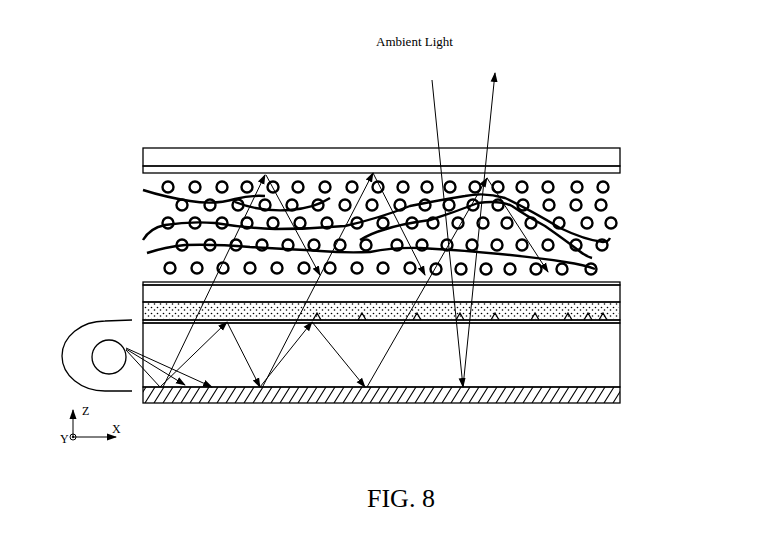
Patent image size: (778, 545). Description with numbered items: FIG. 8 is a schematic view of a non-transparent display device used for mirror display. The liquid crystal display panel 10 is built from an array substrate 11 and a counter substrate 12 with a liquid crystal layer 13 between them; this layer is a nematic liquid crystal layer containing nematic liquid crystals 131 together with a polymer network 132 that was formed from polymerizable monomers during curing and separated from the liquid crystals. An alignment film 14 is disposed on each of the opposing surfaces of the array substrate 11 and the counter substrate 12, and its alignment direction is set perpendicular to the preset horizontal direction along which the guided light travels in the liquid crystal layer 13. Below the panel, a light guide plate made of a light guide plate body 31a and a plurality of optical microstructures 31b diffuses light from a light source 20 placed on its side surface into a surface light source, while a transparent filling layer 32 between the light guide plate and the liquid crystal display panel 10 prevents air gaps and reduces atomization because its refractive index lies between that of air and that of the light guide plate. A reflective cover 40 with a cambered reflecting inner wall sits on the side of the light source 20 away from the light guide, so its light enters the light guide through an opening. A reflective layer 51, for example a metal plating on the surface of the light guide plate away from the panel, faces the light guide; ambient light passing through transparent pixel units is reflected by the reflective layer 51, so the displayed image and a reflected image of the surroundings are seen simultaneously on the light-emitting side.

The liquid crystal display panel 10 is at (437, 224).
The array substrate 11 is at (620, 293).
The counter substrate 12 is at (620, 155).
The liquid crystal layer 13 is at (418, 228).
The nematic liquid crystals 131 is at (610, 187).
The polymer network 132 is at (607, 240).
The alignment film 14 is at (620, 170).
The light source 20 is at (105, 350).
The reflective cover 40 is at (70, 337).
The light guide plate body 31a is at (603, 352).
The optical microstructures 31b is at (607, 320).
The transparent filling layer 32 is at (618, 312).
The reflective layer 51 is at (592, 403).